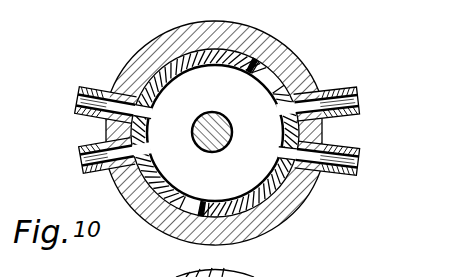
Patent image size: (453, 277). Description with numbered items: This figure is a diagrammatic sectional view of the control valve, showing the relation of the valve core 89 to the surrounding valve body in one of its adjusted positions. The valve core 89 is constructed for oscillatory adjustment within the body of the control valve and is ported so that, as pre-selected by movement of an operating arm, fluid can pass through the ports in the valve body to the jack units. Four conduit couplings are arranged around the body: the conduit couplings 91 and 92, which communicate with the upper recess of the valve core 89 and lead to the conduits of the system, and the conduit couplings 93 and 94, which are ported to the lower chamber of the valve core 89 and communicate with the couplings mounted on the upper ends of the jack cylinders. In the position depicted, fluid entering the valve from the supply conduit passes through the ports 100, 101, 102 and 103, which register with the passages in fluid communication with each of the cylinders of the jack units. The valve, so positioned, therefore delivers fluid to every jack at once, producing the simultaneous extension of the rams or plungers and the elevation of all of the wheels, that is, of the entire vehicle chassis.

The valve core 89 is at (212, 114).
The conduit coupling 91 is at (321, 91).
The conduit coupling 92 is at (93, 89).
The conduit coupling 93 is at (354, 178).
The conduit coupling 94 is at (93, 172).
The port 100 is at (272, 92).
The port 101 is at (122, 190).
The port 102 is at (291, 150).
The port 103 is at (152, 116).